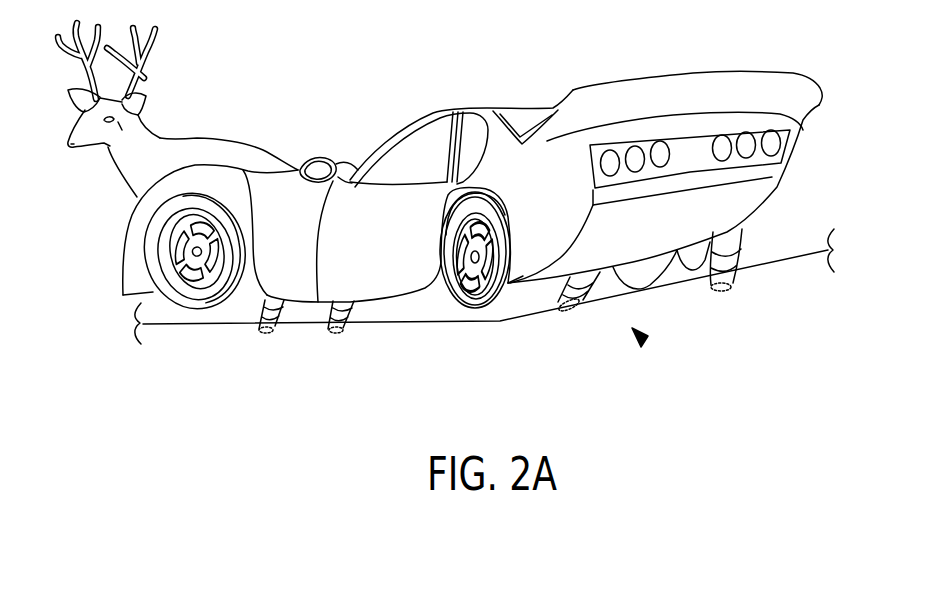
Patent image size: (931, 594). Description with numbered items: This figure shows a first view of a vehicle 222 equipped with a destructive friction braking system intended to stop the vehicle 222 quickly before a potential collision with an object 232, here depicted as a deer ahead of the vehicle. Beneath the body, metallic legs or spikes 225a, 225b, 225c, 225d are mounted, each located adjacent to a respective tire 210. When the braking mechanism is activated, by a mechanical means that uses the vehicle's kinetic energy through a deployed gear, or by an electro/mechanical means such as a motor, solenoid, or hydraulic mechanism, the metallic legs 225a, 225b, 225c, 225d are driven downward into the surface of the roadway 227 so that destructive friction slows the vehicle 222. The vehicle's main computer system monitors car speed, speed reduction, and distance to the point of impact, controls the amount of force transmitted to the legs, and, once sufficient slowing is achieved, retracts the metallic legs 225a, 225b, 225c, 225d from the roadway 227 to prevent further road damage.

The tire 210 is at (183, 303).
The vehicle 222 is at (299, 165).
The object 232 is at (195, 136).
The metallic leg 225a is at (272, 313).
The metallic leg 225b is at (347, 313).
The metallic leg 225c is at (733, 236).
The metallic leg 225d is at (559, 319).
The roadway 227 is at (644, 340).